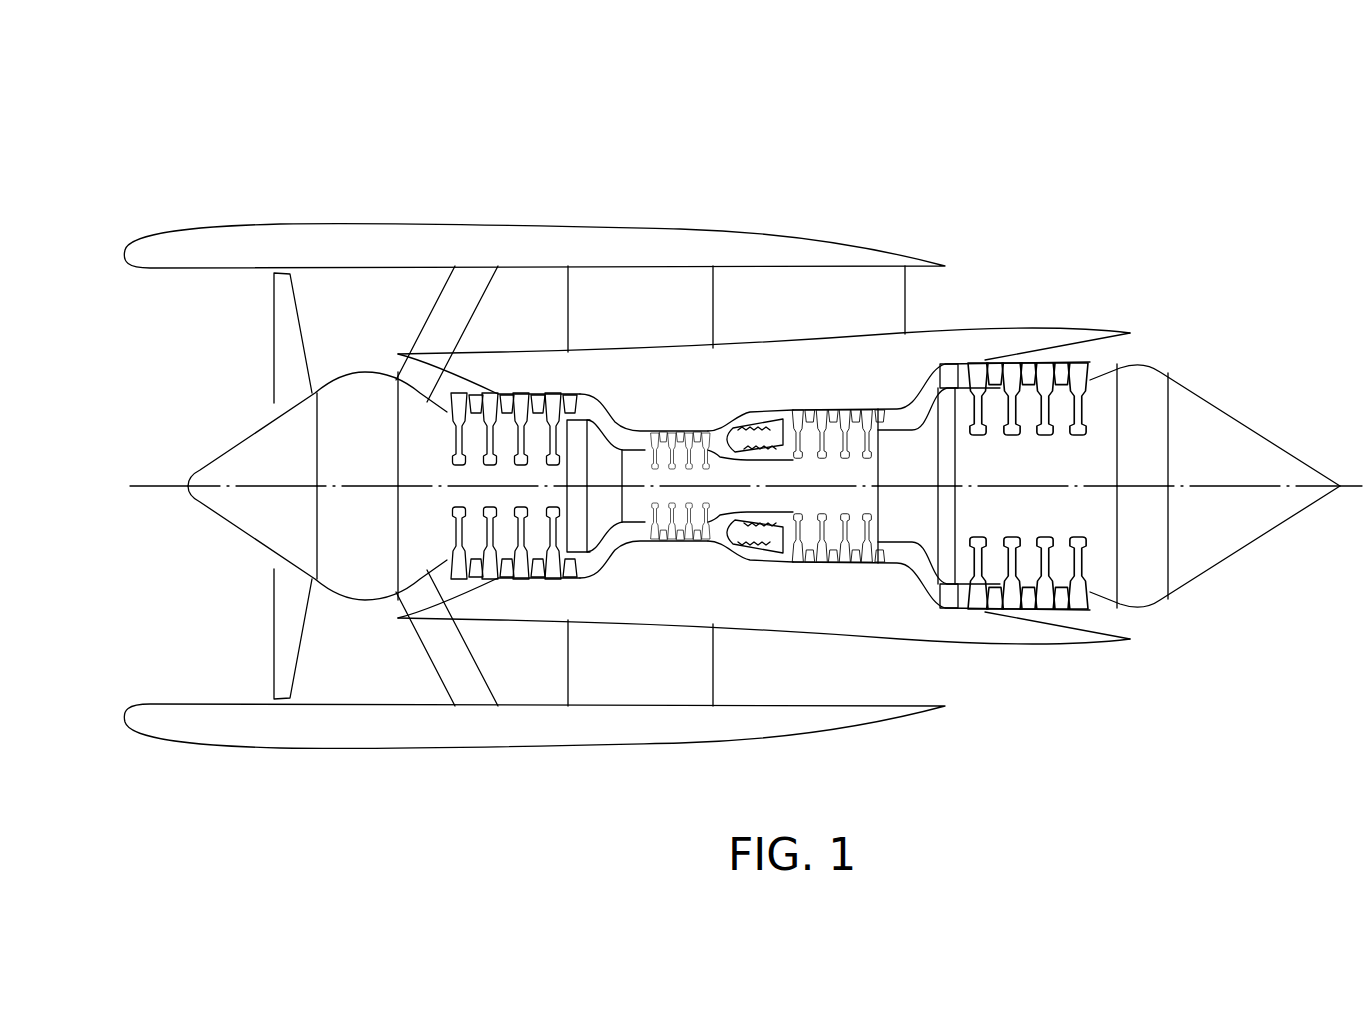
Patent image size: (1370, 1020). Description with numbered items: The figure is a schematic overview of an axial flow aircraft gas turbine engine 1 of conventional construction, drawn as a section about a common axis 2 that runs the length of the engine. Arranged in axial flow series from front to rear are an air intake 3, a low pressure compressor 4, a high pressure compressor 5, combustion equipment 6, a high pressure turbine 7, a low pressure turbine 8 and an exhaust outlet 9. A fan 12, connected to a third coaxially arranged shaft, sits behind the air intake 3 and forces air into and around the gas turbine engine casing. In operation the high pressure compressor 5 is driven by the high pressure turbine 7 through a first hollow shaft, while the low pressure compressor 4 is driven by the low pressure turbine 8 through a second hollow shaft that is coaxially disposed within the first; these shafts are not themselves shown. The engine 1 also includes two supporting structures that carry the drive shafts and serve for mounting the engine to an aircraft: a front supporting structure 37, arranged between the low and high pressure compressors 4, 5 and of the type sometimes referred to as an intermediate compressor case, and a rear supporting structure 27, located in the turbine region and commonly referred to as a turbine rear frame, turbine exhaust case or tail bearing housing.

The gas turbine engine 1 is at (1240, 109).
The common axis 2 is at (147, 486).
The air intake 3 is at (200, 318).
The fan 12 is at (288, 337).
The low pressure compressor 4 is at (518, 422).
The front supporting structure 37 is at (603, 423).
The high pressure compressor 5 is at (692, 433).
The combustion equipment 6 is at (753, 410).
The high pressure turbine 7 is at (870, 405).
The rear supporting structure 27 is at (958, 372).
The low pressure turbine 8 is at (1078, 368).
The exhaust outlet 9 is at (1143, 344).